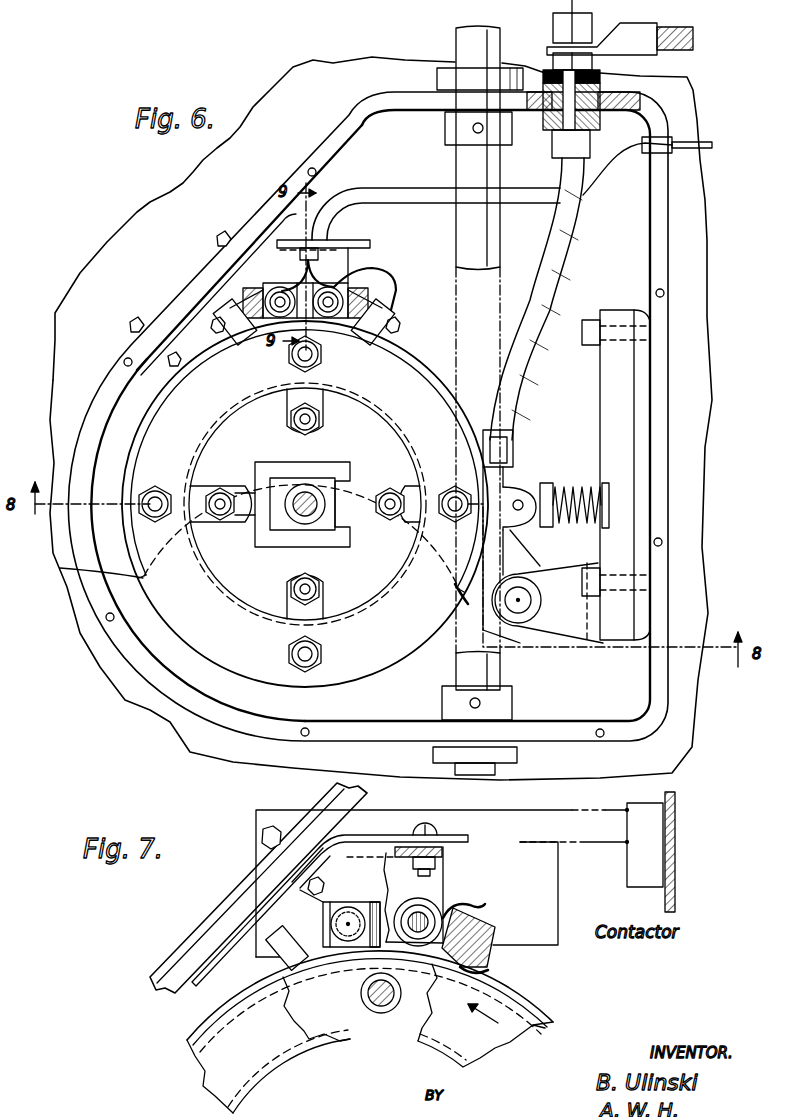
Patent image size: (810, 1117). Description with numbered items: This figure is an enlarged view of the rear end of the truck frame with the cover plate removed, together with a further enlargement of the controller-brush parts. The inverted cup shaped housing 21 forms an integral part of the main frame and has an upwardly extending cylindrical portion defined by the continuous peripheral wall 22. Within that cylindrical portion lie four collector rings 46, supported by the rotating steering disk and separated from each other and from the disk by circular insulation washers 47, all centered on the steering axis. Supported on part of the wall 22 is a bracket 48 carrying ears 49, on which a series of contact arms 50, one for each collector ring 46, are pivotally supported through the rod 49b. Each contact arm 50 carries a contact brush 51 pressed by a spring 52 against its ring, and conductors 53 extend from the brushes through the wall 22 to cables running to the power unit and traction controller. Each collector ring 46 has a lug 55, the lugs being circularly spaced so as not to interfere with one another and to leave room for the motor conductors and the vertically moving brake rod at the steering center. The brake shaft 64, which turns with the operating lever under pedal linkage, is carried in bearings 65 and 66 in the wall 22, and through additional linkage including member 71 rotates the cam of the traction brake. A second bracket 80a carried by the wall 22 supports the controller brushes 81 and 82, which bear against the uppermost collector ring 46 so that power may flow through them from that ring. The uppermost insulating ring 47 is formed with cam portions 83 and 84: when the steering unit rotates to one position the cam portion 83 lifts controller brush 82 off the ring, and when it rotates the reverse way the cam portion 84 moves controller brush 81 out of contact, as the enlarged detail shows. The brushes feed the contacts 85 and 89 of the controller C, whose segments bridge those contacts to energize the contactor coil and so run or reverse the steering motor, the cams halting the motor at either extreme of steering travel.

In FIG. 6, the inverted cup shaped housing 21 is at (100, 250).
In FIG. 6, the peripheral wall 22 is at (85, 593).
In FIG. 7, the peripheral wall 22 is at (170, 950).
In FIG. 6, the collector ring 46 is at (146, 430).
In FIG. 7, the collector ring 46 is at (272, 972).
In FIG. 6, the circular insulation washer 47 is at (425, 368).
In FIG. 7, the circular insulation washer 47 is at (226, 1028).
In FIG. 6, the bracket 48 is at (605, 392).
In FIG. 6, the ears 49 is at (572, 628).
In FIG. 6, the rod 49b is at (522, 610).
In FIG. 6, the contact arm 50 is at (540, 543).
In FIG. 6, the contact brush 51 is at (513, 470).
In FIG. 6, the spring 52 is at (310, 492).
In FIG. 6, the conductor 53 is at (575, 243).
In FIG. 6, the lug 55 is at (322, 404).
In FIG. 7, the lug 55 is at (372, 1060).
In FIG. 6, the shaft 64 is at (458, 170).
In FIG. 6, the bearing 65 is at (520, 757).
In FIG. 6, the bearing 66 is at (437, 78).
In FIG. 6, the linkage member 71 is at (328, 546).
In FIG. 6, the bracket 80a is at (240, 279).
In FIG. 7, the bracket 80a is at (290, 892).
In FIG. 6, the controller brush 81 is at (388, 312).
In FIG. 7, the controller brush 81 is at (495, 926).
In FIG. 6, the controller brush 82 is at (240, 336).
In FIG. 7, the controller brush 82 is at (300, 962).
In FIG. 6, the cam portion 83 is at (80, 566).
In FIG. 6, the cam portion 84 is at (462, 594).
In FIG. 7, the cam portion 84 is at (490, 969).
In FIG. 7, the contact 85 is at (627, 810).
In FIG. 7, the contact 89 is at (626, 846).
In FIG. 7, the controller C is at (675, 848).